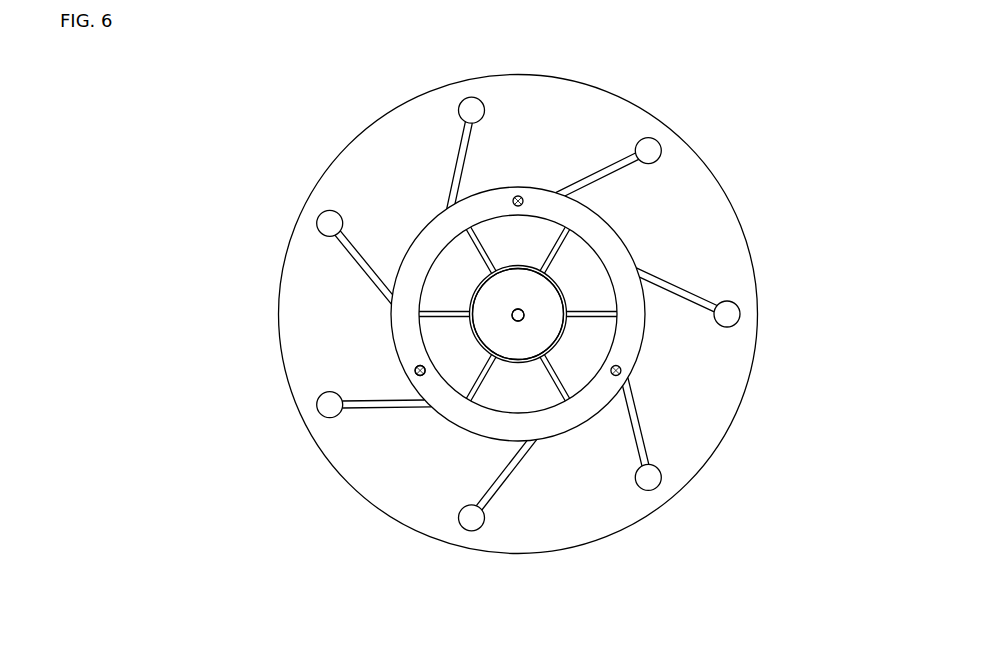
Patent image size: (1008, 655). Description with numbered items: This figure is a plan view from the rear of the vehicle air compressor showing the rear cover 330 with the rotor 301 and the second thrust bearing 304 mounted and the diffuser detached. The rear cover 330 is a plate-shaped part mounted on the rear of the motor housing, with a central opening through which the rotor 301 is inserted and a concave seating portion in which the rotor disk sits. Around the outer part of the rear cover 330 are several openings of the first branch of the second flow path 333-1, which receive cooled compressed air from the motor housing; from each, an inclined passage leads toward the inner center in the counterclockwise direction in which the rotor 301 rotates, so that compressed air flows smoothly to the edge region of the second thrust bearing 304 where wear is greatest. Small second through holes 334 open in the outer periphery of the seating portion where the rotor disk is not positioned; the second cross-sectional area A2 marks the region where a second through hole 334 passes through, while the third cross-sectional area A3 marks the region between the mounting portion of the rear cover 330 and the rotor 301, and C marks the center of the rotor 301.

The rear cover 330 is at (697, 203).
The 2-1-th flow path 333-1 is at (649, 151).
The second thrust bearing 304 is at (590, 343).
The second through hole 334 is at (618, 372).
The rotor 301 is at (545, 302).
The second cross-sectional area A2 is at (417, 370).
The third cross-sectional area A3 is at (525, 366).
The center axis C is at (507, 365).